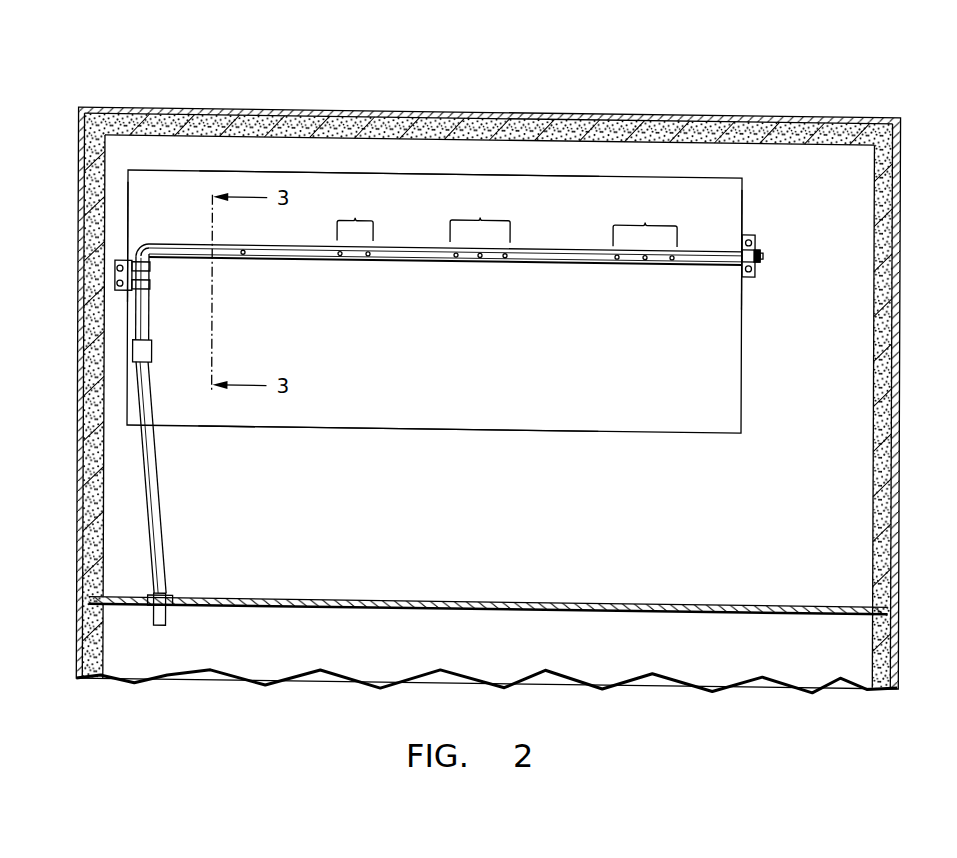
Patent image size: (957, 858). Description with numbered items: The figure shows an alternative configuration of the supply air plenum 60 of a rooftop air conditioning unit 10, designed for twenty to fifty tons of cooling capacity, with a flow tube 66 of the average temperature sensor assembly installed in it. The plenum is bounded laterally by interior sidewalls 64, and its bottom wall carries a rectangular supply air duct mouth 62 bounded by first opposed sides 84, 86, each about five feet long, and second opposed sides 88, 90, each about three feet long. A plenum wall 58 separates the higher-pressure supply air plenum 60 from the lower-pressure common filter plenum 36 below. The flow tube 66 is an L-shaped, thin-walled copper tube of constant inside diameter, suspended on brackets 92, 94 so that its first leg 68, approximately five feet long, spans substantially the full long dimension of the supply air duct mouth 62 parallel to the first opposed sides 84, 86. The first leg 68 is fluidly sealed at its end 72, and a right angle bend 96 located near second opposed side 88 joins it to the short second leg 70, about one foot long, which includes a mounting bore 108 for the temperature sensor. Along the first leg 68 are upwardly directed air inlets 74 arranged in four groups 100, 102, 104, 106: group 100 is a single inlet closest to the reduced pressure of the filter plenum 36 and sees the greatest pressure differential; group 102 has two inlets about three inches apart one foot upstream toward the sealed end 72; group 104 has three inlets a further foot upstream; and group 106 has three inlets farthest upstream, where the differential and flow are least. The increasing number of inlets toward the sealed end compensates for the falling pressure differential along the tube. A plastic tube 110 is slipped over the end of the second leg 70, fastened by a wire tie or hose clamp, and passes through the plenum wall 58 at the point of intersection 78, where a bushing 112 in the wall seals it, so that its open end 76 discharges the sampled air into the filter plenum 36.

The air conditioning unit 10 is at (488, 353).
The common filter plenum 36 is at (288, 648).
The plenum wall 58 is at (368, 593).
The supply air plenum 60 is at (312, 176).
The supply air duct mouth 62 is at (439, 356).
The interior sidewalls 64 is at (87, 404).
The flow tube 66 is at (294, 258).
The first leg 68 is at (556, 242).
The second leg 70 is at (153, 298).
The sealed end 72 is at (764, 246).
The air inlets 74 is at (244, 259).
The open end 76 is at (164, 623).
The point of intersection 78 is at (172, 593).
The first opposed side 84 is at (416, 170).
The first opposed side 86 is at (474, 419).
The second opposed side 88 is at (129, 195).
The second opposed side 90 is at (743, 218).
The bracket 92 is at (116, 266).
The bracket 94 is at (753, 268).
The right angle bend 96 is at (137, 247).
The first group of air inlets 100 is at (244, 242).
The second group of air inlets 102 is at (356, 214).
The third group of air inlets 104 is at (480, 214).
The fourth group of air inlets 106 is at (645, 220).
The mounting bore 108 is at (153, 318).
The plastic tube 110 is at (168, 501).
The bushing 112 is at (152, 591).